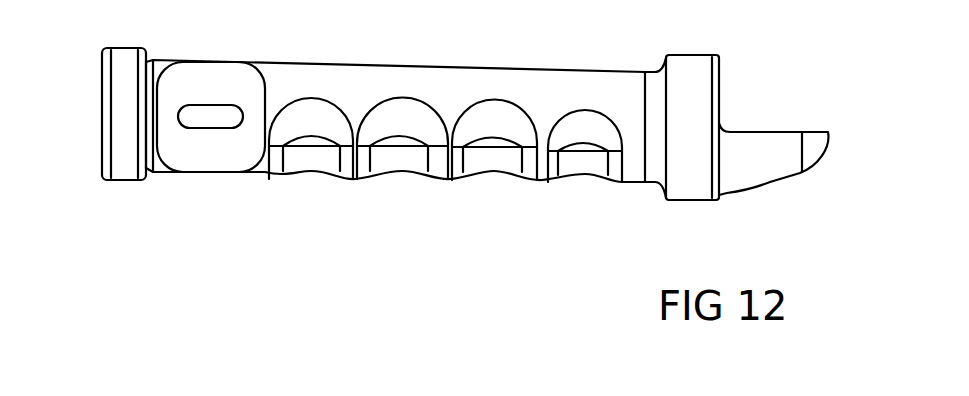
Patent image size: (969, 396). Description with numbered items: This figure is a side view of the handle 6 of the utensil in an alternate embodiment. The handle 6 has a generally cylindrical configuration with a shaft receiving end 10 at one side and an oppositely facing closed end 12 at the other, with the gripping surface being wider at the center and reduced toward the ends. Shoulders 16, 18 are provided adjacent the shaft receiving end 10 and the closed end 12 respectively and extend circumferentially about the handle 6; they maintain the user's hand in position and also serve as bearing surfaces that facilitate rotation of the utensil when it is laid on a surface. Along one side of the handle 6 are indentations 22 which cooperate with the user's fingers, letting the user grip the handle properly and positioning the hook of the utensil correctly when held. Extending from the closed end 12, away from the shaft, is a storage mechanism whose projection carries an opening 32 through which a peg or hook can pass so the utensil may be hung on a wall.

The shaft receiving end 10 is at (100, 143).
The handle 6 is at (462, 53).
The shoulder 16 is at (130, 44).
The indentations 22 is at (480, 178).
The shoulder 18 is at (702, 78).
The closed end 12 is at (723, 92).
The opening 32 is at (828, 147).